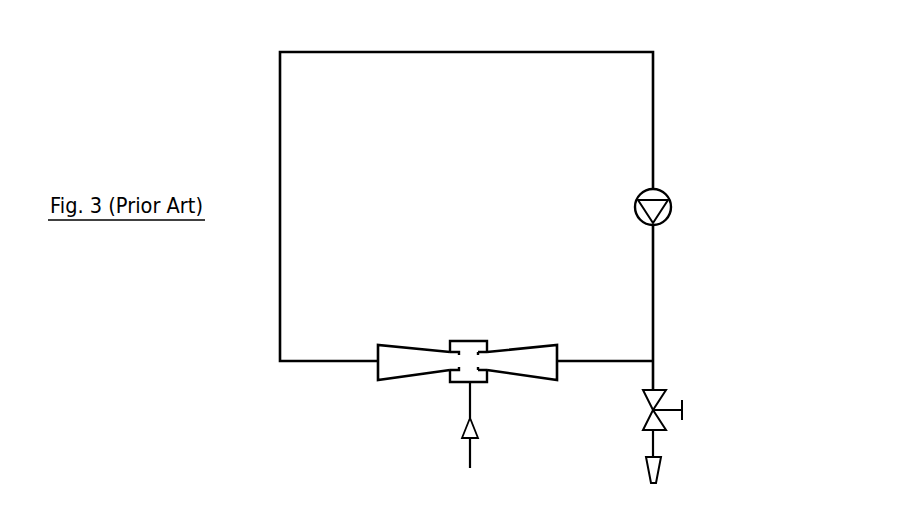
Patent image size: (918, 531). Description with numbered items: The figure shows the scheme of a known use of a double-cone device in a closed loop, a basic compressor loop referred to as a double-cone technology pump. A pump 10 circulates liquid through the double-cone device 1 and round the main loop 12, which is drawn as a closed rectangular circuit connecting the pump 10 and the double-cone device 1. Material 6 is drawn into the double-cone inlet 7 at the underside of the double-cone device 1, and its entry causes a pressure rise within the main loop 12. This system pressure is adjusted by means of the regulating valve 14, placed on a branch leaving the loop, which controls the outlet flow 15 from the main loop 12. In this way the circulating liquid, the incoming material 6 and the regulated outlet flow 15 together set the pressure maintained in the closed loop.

The double-cone device 1 is at (527, 345).
The material 6 is at (470, 460).
The inlet 7 is at (467, 387).
The pump 10 is at (665, 192).
The main loop 12 is at (653, 82).
The regulating valve 14 is at (682, 402).
The outlet flow 15 is at (662, 463).